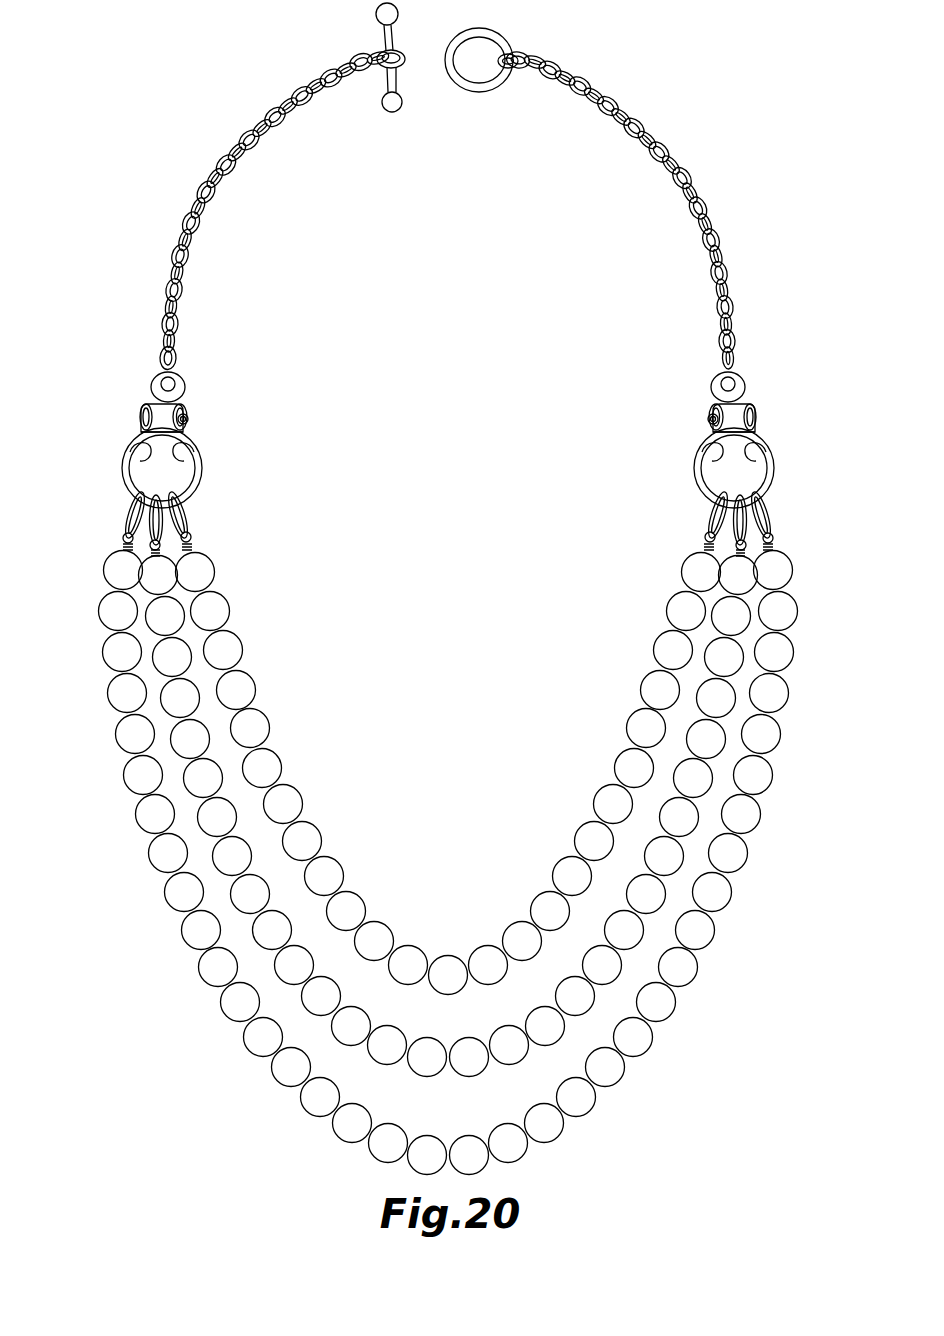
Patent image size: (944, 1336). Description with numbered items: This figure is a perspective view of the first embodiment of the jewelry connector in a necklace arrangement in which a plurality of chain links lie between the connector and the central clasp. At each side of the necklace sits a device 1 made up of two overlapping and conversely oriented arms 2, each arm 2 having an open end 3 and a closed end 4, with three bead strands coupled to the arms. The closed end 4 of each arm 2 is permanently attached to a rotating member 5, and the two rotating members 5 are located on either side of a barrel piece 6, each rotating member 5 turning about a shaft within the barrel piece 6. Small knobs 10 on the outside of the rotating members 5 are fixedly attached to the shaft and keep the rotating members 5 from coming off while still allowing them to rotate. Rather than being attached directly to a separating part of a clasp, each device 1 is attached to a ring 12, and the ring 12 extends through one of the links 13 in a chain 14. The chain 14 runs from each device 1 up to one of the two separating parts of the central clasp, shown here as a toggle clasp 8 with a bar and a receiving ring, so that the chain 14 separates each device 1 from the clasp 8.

The device 1 is at (116, 501).
The arm 2 is at (123, 462).
The open end 3 is at (134, 448).
The closed end 4 is at (140, 434).
The rotating member 5 is at (140, 415).
The barrel piece 6 is at (160, 407).
The toggle clasp 8 is at (387, 118).
The knob 10 is at (189, 421).
The ring 12 is at (185, 380).
The link 13 is at (152, 366).
The chain 14 is at (162, 240).